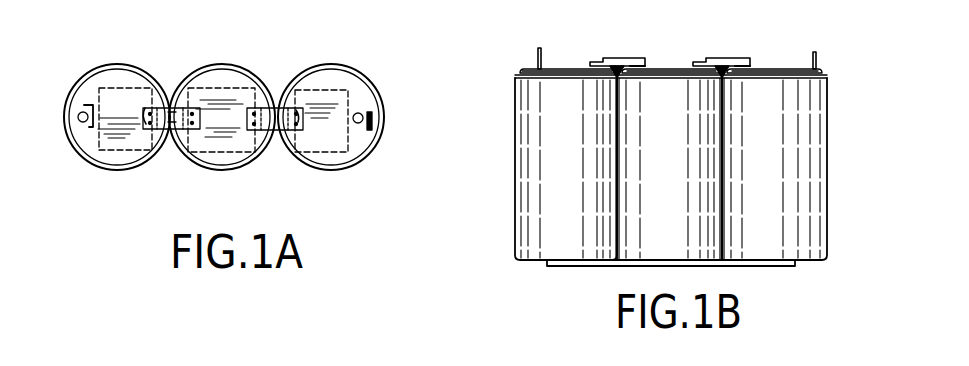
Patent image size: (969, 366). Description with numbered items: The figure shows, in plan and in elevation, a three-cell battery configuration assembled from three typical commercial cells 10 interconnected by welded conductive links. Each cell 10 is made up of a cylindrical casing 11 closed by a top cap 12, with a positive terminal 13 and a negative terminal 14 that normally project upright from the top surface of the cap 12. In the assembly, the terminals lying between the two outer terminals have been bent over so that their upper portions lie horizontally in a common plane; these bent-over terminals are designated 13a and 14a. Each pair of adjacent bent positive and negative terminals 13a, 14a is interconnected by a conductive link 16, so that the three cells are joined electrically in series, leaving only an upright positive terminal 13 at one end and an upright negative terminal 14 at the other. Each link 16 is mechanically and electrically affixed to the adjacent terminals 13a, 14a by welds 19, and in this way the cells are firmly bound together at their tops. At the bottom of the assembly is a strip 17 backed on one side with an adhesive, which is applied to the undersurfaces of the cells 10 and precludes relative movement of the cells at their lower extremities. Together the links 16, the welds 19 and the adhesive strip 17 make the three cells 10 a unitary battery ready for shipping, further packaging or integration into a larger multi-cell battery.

In FIG. 1A, the cell 10 is at (108, 62).
In FIG. 1B, the cell 10 is at (514, 174).
In FIG. 1A, the cylindrical casing 11 is at (86, 74).
In FIG. 1B, the cylindrical casing 11 is at (580, 182).
In FIG. 1A, the top cap 12 is at (223, 120).
In FIG. 1B, the top cap 12 is at (567, 70).
In FIG. 1A, the positive terminal 13 is at (84, 105).
In FIG. 1B, the positive terminal 13 is at (538, 52).
In FIG. 1A, the bent-over positive terminal 13a is at (186, 150).
In FIG. 1B, the bent-over positive terminal 13a is at (638, 64).
In FIG. 1A, the negative terminal 14 is at (373, 112).
In FIG. 1B, the negative terminal 14 is at (816, 55).
In FIG. 1A, the bent-over negative terminal 14a is at (150, 165).
In FIG. 1B, the bent-over negative terminal 14a is at (597, 60).
In FIG. 1B, the conductive link 16 is at (620, 60).
In FIG. 1A, the strip 17 is at (166, 92).
In FIG. 1B, the strip 17 is at (786, 268).
In FIG. 1A, the weld 19 is at (144, 108).